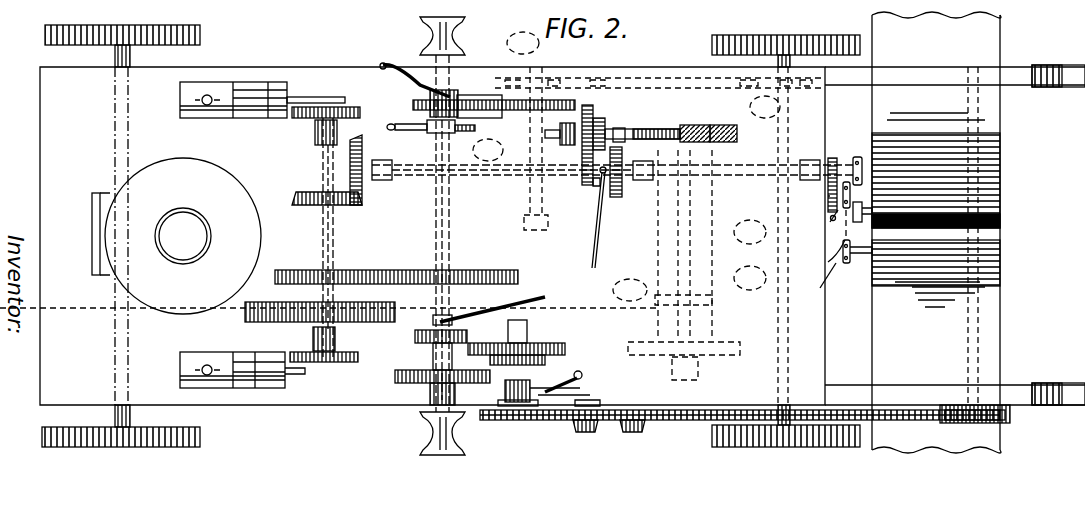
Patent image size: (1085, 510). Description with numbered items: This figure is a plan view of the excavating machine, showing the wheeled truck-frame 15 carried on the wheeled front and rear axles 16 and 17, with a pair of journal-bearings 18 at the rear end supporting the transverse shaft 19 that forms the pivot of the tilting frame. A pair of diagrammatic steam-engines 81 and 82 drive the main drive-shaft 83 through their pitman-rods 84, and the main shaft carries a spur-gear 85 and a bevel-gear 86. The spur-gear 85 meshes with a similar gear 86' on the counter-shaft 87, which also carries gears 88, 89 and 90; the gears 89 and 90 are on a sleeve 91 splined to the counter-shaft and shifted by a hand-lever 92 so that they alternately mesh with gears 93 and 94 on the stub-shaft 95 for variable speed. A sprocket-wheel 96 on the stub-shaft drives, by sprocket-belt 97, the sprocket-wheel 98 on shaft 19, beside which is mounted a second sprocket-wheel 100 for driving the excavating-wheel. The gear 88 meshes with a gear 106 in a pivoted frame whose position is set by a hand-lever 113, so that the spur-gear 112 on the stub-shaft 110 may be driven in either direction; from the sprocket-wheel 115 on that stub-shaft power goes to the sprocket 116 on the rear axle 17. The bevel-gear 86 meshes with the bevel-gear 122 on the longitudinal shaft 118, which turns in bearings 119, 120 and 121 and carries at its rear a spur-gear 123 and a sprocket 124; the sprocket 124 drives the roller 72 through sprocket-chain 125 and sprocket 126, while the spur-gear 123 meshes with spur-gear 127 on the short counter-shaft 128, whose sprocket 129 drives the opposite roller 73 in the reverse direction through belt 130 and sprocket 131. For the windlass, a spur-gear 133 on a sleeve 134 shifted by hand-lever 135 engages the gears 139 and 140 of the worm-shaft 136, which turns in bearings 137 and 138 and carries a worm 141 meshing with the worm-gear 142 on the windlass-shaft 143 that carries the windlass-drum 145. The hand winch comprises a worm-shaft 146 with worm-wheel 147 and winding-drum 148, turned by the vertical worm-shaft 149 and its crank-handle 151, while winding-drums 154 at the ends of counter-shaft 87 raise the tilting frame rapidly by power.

The wheeled truck-frame 15 is at (40, 76).
The front axle 16 is at (130, 57).
The rear axle 17 is at (785, 52).
The journal-bearings 18 is at (1050, 87).
The shaft 19 is at (995, 232).
The drive roller 72 is at (853, 246).
The drive-roller 73 is at (852, 264).
The steam-engine 81 is at (210, 118).
The steam-engine 82 is at (200, 352).
The main drive-shaft 83 is at (333, 232).
The pitman-rods 84 is at (320, 106).
The spur-gear 85 is at (295, 275).
The bevel-gear 86 is at (314, 189).
The gear 86' is at (396, 259).
The counter-shaft 87 is at (452, 220).
The gear 88 is at (413, 105).
The gear 89 is at (415, 338).
The gear 90 is at (398, 380).
The sleeve 91 is at (433, 356).
The hand-lever 92 is at (548, 292).
The gear 93 is at (562, 348).
The gear 94 is at (565, 388).
The stub-shaft 95 is at (538, 368).
The sprocket-wheel 96 is at (515, 412).
The sprocket-belt 97 is at (670, 420).
The sprocket-wheel 98 is at (1000, 420).
The sprocket-wheel 100 is at (985, 405).
The gear 106 is at (480, 98).
The stub-shaft 110 is at (540, 143).
The spur-gear 112 is at (505, 112).
The hand-lever 113 is at (427, 133).
The sprocket-wheel 115 is at (527, 72).
The sprocket 116 is at (772, 88).
The shaft 118 is at (432, 177).
The bearing 119 is at (382, 180).
The bearing 120 is at (810, 160).
The bearing 121 is at (643, 182).
The bevel-gear 122 is at (355, 145).
The spur-gear 123 is at (836, 162).
The sprocket 124 is at (862, 165).
The sprocket-chain 125 is at (850, 192).
The sprocket 126 is at (862, 206).
The spur-gear 127 is at (828, 196).
The counter-shaft 128 is at (838, 213).
The sprocket 129 is at (845, 240).
The belt 130 is at (830, 262).
The sprocket 131 is at (818, 280).
The spur-gear 133 is at (615, 198).
The sleeve 134 is at (595, 186).
The hand-lever 135 is at (598, 252).
The worm-shaft 136 is at (645, 128).
The bearing 137 is at (619, 128).
The bearing 138 is at (565, 124).
The gear 139 is at (588, 105).
The gear 140 is at (603, 118).
The worm 141 is at (698, 126).
The worm-gear 142 is at (712, 3).
The windlass-shaft 143 is at (690, 242).
The windlass-drum 145 is at (612, 306).
The worm-shaft 146 is at (612, 432).
The worm-wheel 147 is at (592, 404).
The winding-drum 148 is at (582, 432).
The worm-shaft 149 is at (580, 392).
The crank-handle 151 is at (585, 383).
The winding-drums 154 is at (422, 30).